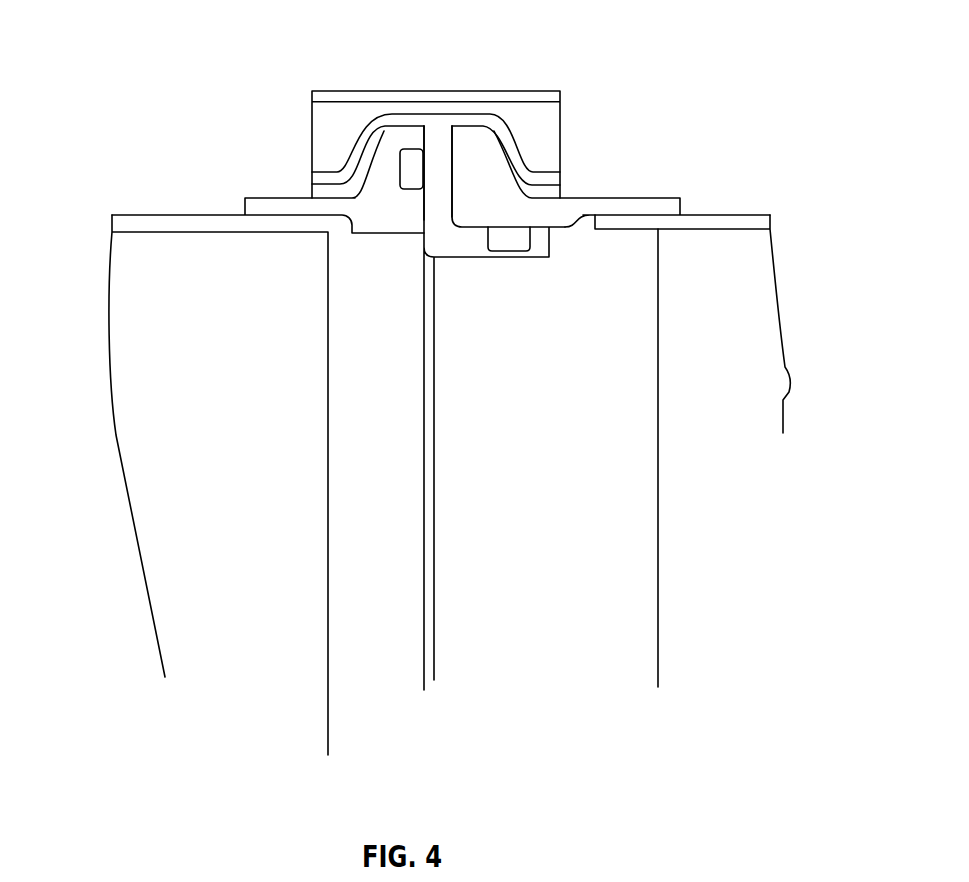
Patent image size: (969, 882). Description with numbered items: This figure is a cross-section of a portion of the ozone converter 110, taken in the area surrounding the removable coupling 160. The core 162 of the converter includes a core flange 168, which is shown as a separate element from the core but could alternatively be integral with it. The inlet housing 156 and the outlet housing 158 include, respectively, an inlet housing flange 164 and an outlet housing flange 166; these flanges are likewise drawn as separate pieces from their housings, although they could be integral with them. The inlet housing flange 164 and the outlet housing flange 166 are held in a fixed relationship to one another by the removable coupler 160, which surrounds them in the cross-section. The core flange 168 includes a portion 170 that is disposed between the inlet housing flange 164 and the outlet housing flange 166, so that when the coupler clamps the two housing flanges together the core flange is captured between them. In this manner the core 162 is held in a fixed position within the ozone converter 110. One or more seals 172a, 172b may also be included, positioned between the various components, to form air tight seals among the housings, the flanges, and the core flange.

The ozone converter 110 is at (186, 53).
The inlet housing 156 is at (128, 297).
The outlet housing 158 is at (767, 290).
The removable coupling 160 is at (328, 135).
The core 162 is at (640, 535).
The inlet housing flange 164 is at (365, 213).
The outlet housing flange 166 is at (495, 177).
The core flange 168 is at (457, 270).
The portion of the core flange 170 is at (447, 143).
The seal 172a is at (412, 163).
The seal 172b is at (518, 240).